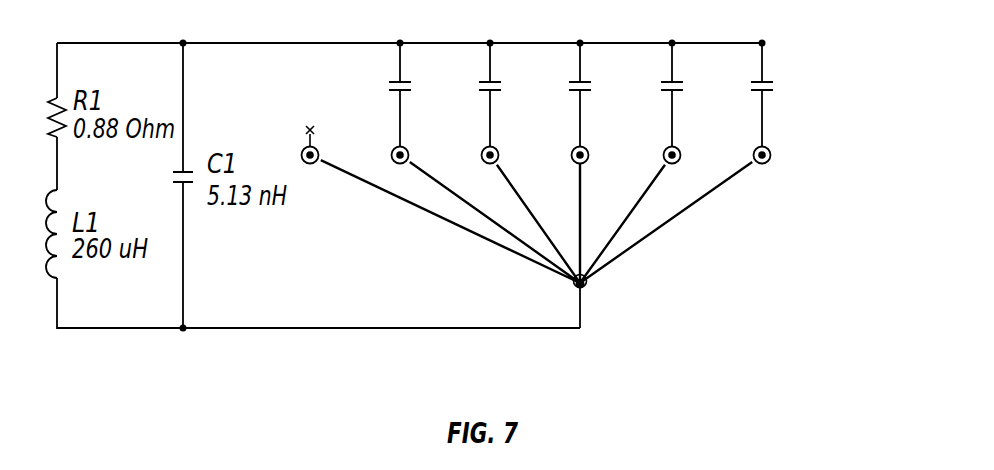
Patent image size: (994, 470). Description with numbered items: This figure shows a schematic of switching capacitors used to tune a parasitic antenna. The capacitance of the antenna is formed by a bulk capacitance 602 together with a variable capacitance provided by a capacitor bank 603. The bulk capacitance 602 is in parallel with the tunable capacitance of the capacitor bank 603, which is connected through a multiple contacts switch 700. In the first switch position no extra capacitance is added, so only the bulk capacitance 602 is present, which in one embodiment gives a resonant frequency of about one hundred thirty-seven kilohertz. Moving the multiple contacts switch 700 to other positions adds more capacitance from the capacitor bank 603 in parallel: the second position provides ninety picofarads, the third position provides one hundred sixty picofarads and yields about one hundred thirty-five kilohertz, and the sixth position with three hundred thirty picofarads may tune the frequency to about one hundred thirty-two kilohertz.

The bulk capacitance 602 is at (215, 130).
The capacitor bank 603 is at (818, 53).
The multiple contacts switch 700 is at (632, 303).